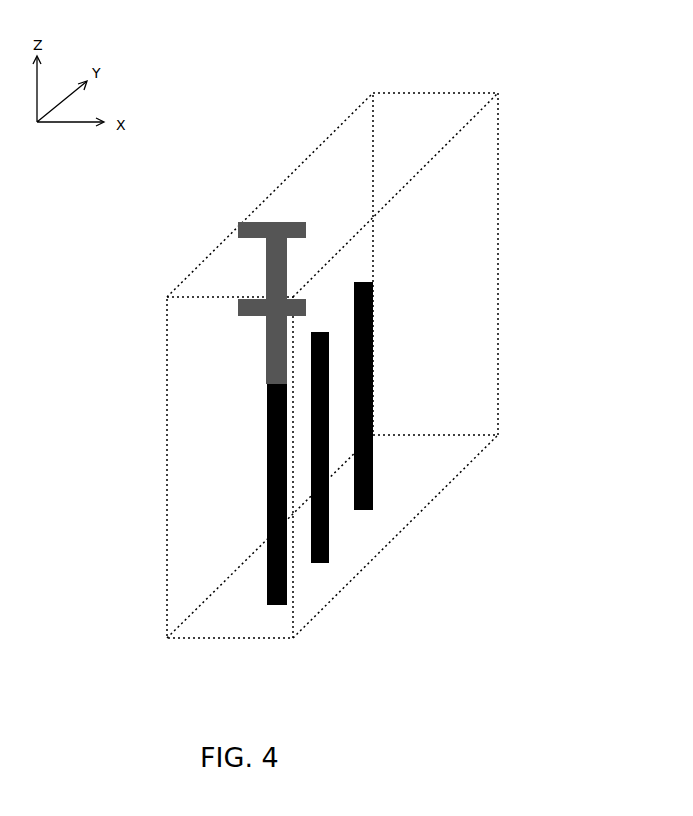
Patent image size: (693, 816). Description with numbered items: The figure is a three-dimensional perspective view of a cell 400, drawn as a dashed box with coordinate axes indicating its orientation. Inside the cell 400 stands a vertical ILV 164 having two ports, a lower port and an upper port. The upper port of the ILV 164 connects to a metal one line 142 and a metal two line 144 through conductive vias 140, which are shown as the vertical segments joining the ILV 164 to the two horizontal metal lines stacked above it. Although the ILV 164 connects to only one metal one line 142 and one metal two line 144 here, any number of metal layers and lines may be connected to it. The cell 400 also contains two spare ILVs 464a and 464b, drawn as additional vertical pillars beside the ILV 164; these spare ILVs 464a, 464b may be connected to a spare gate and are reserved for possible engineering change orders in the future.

The cell 400 is at (586, 107).
The metal two line 144 is at (237, 229).
The conductive vias 140 is at (266, 263).
The metal one line 142 is at (238, 310).
The ILV 164 is at (267, 520).
The spare ILV 464a is at (329, 540).
The spare ILV 464b is at (373, 450).